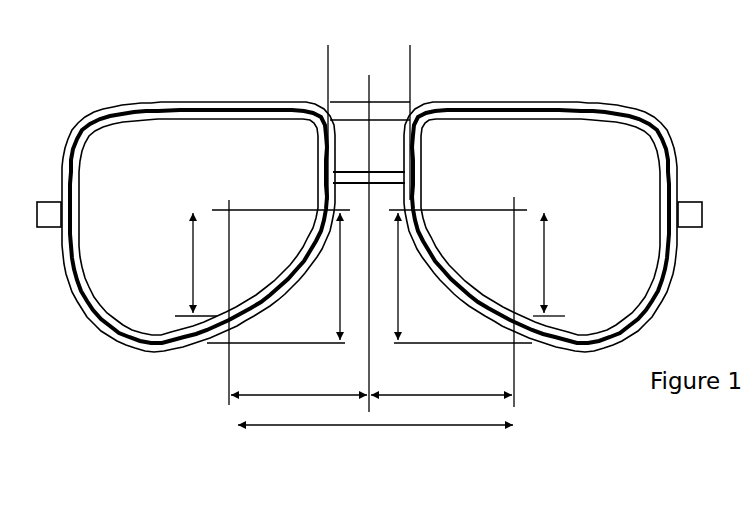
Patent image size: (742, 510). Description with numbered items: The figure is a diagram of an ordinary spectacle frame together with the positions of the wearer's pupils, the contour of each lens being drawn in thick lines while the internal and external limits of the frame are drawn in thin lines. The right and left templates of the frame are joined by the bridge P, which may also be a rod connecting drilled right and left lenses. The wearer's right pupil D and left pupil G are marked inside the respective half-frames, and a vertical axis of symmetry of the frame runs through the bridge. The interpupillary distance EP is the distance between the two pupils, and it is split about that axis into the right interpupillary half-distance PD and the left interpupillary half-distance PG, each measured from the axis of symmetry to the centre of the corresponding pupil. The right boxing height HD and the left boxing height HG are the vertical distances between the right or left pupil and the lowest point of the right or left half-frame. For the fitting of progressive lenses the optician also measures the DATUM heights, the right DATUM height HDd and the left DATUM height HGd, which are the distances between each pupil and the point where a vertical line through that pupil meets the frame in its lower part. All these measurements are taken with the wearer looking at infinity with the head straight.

The bridge of the frame P is at (410, 53).
The right pupil D is at (228, 293).
The left pupil G is at (515, 293).
The right boxing height HD is at (278, 276).
The left boxing height HG is at (460, 276).
The right DATUM height HDd is at (174, 264).
The left DATUM height HGd is at (566, 264).
The right interpupillary half-distance PD is at (299, 380).
The left interpupillary half-distance PG is at (441, 380).
The interpupillary distance EP is at (375, 446).